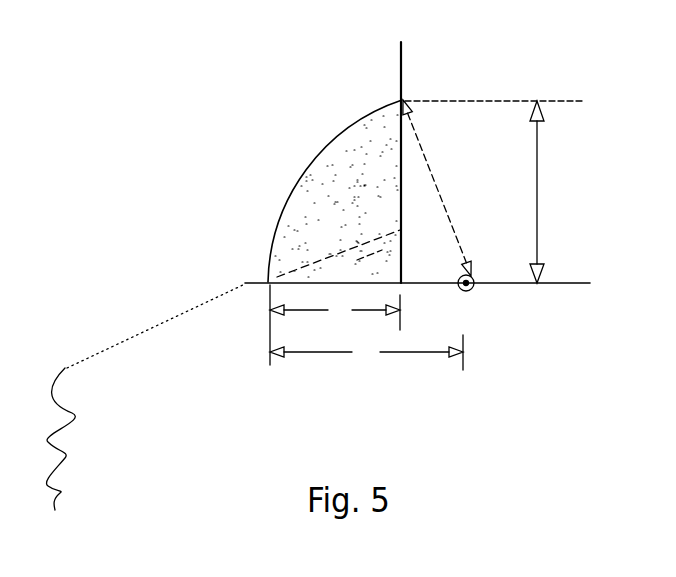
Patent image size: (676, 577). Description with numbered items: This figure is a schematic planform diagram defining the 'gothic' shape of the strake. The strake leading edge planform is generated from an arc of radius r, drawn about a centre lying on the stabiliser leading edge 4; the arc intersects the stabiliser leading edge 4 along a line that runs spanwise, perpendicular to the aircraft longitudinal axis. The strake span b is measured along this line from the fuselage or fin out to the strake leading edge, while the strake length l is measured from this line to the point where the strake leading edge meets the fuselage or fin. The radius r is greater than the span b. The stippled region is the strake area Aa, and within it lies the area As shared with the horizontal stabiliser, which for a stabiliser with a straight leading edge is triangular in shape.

The stabiliser leading edge 4 is at (160, 318).
The strake area Aa is at (303, 223).
The shared area As is at (392, 270).
The radius r is at (370, 235).
The strake length l is at (547, 192).
The strake span b is at (335, 325).